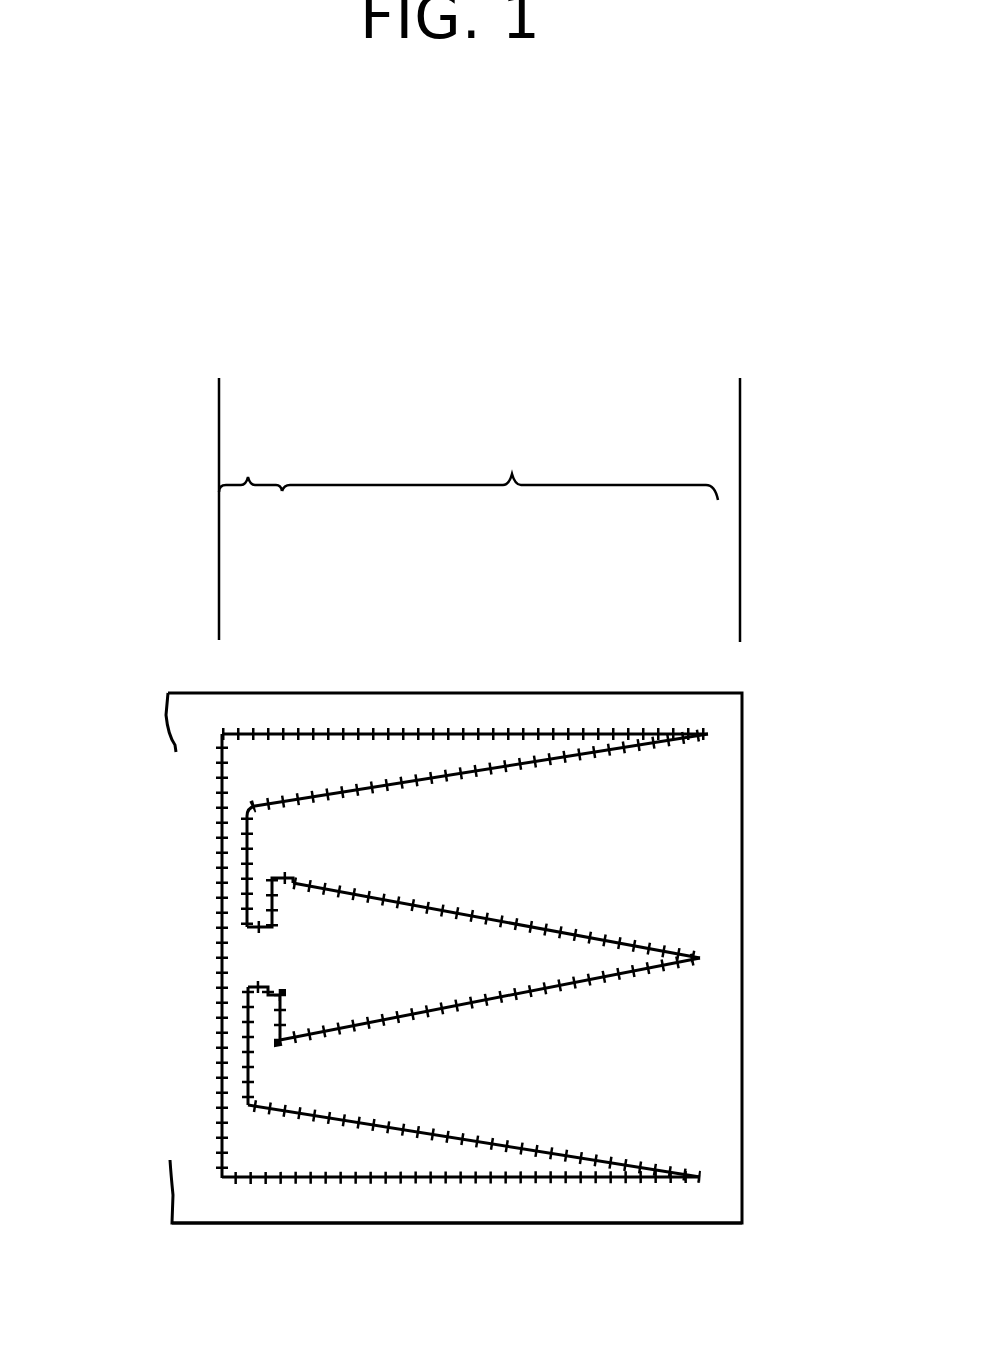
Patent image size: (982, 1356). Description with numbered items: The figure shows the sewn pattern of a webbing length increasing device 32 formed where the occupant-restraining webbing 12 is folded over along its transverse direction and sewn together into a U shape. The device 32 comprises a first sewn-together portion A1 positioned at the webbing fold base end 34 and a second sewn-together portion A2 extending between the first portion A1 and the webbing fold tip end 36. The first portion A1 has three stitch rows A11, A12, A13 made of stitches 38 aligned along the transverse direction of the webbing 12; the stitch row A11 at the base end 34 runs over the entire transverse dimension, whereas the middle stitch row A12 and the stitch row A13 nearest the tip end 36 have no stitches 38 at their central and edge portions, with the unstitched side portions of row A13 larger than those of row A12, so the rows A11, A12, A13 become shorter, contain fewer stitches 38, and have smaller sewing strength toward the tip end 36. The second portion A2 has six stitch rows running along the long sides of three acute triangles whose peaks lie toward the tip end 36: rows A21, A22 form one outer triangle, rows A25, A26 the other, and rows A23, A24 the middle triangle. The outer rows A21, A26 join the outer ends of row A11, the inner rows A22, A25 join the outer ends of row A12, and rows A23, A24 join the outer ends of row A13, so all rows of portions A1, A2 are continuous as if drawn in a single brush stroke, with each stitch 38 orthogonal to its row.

The webbing 12 is at (778, 744).
The webbing length increasing device 32 is at (417, 1228).
The webbing fold base end 34 is at (220, 397).
The webbing fold tip end 36 is at (742, 398).
The stitches 38 is at (222, 982).
The first sewn-together portion A1 is at (250, 450).
The second sewn-together portion A2 is at (500, 456).
The stitch row A11 is at (222, 825).
The stitch row A12 is at (250, 857).
The stitch row A13 is at (280, 902).
The stitch row A21 is at (545, 733).
The stitch row A22 is at (583, 748).
The stitch row A23 is at (640, 938).
The stitch row A24 is at (560, 997).
The stitch row A25 is at (603, 1153).
The stitch row A26 is at (533, 1180).